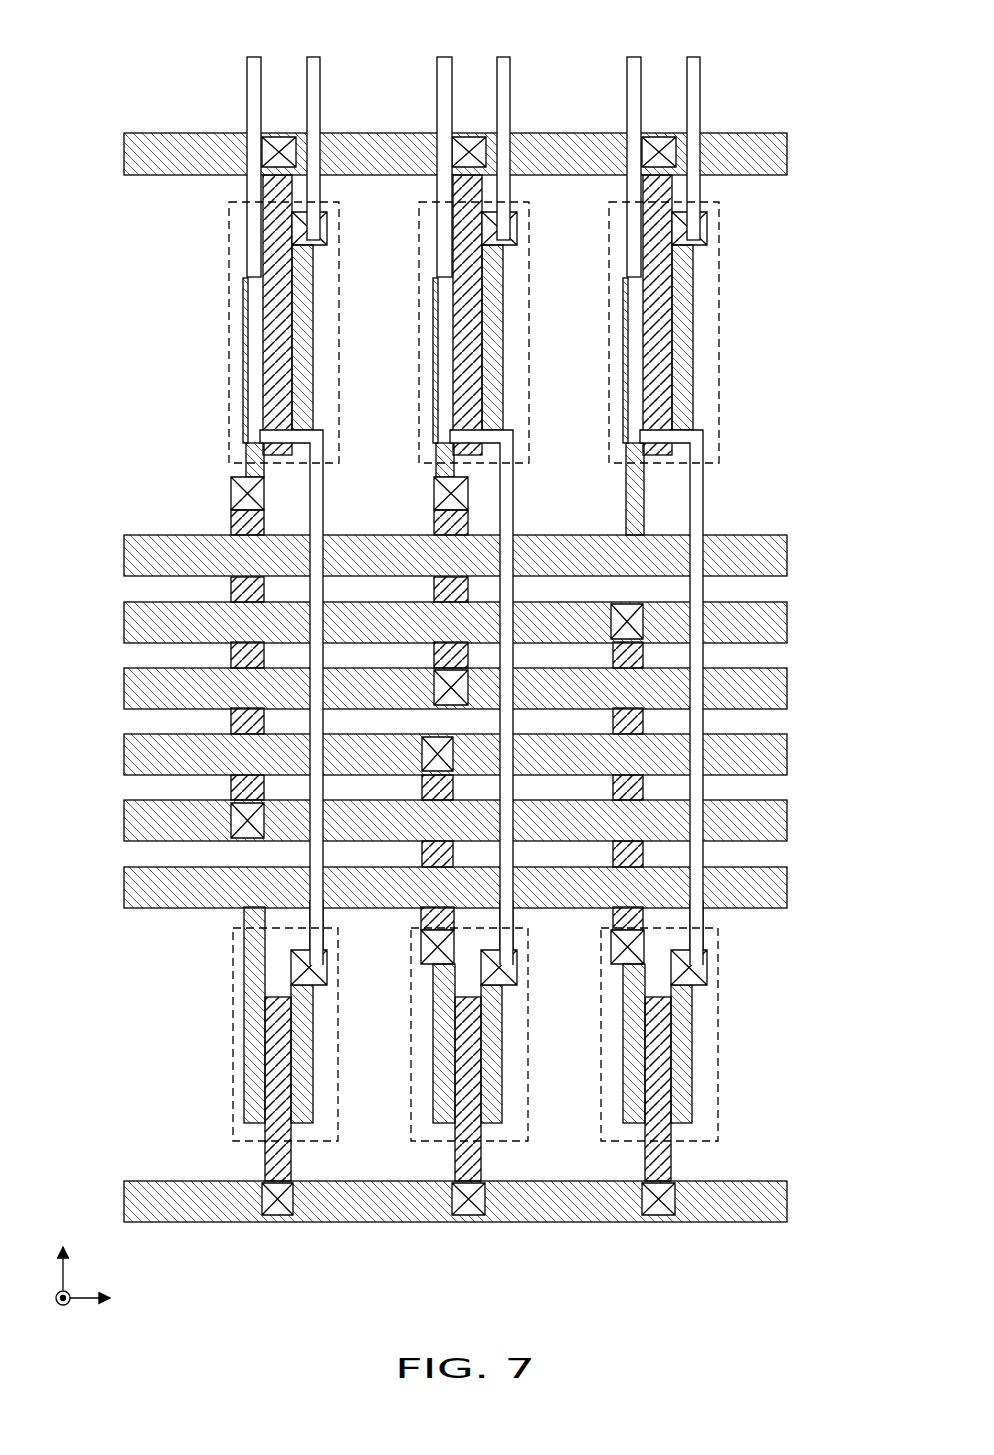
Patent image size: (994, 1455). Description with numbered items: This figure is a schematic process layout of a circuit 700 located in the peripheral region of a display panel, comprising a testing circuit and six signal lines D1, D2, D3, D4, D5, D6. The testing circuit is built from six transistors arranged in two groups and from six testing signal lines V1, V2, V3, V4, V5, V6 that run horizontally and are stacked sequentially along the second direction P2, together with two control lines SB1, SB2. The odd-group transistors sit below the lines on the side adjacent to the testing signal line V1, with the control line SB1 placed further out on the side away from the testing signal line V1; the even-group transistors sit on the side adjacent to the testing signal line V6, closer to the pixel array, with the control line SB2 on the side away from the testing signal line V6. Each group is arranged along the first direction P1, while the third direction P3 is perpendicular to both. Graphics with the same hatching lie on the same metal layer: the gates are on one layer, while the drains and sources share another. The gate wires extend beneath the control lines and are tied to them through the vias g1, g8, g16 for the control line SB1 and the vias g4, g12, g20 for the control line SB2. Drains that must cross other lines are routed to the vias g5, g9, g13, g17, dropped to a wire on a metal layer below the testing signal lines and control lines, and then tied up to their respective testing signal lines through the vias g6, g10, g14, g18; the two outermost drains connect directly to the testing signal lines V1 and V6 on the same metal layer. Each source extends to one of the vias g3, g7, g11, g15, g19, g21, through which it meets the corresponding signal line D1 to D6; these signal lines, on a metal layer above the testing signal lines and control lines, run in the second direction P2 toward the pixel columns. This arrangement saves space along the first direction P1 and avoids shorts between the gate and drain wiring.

The circuit 700 is at (860, 1273).
The control line SB1 is at (775, 1183).
The control line SB2 is at (762, 177).
The testing signal line V1 is at (780, 892).
The testing signal line V2 is at (780, 825).
The testing signal line V3 is at (780, 759).
The testing signal line V4 is at (780, 693).
The testing signal line V5 is at (780, 627).
The testing signal line V6 is at (780, 560).
The signal line D1 is at (255, 57).
The signal line D2 is at (313, 57).
The signal line D3 is at (445, 57).
The signal line D4 is at (503, 57).
The signal line D5 is at (635, 57).
The signal line D6 is at (693, 57).
The via g1 is at (279, 1215).
The via g3 is at (318, 967).
The via g4 is at (277, 150).
The via g5 is at (236, 497).
The via g6 is at (238, 820).
The via g7 is at (320, 232).
The via g8 is at (469, 1215).
The via g9 is at (427, 952).
The via g10 is at (435, 757).
The via g11 is at (508, 967).
The via g12 is at (467, 150).
The via g13 is at (440, 497).
The via g14 is at (445, 690).
The via g15 is at (510, 232).
The via g16 is at (659, 1215).
The via g17 is at (617, 952).
The via g18 is at (627, 622).
The via g19 is at (698, 967).
The via g20 is at (657, 150).
The via g21 is at (700, 232).
The first direction P1 is at (113, 1300).
The second direction P2 is at (65, 1265).
The third direction P3 is at (42, 1300).